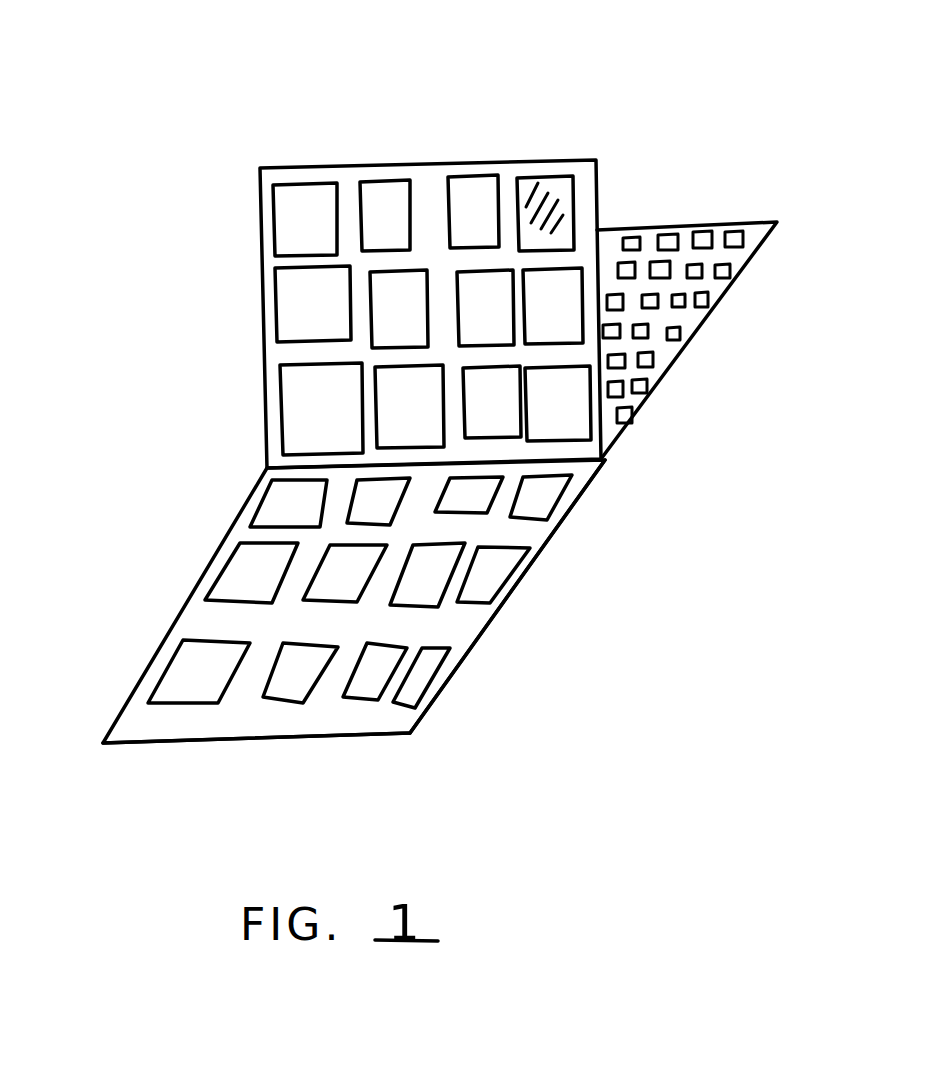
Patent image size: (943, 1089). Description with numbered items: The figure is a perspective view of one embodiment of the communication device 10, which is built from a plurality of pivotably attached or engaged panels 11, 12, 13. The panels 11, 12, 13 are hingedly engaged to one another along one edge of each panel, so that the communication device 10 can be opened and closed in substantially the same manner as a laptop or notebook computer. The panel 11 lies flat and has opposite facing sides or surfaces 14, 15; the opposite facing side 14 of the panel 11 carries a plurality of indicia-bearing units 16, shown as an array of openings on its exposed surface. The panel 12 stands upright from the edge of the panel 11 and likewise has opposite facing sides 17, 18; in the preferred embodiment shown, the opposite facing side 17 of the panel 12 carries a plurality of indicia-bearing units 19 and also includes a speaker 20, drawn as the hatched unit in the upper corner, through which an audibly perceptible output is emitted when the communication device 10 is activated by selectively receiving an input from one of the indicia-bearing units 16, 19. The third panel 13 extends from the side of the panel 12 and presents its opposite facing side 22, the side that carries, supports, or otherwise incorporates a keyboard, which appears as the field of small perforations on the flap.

The communication device 10 is at (140, 83).
The panel 11 is at (130, 725).
The panel 12 is at (603, 458).
The panel 13 is at (780, 225).
The opposite facing side 14 is at (360, 723).
The opposite facing side 15 is at (467, 648).
The indicia-bearing units 16 is at (242, 570).
The opposite facing side 17 is at (280, 347).
The opposite facing side 18 is at (390, 271).
The indicia-bearing units 19 is at (285, 207).
The speaker 20 is at (560, 178).
The opposite facing side 22 is at (670, 357).